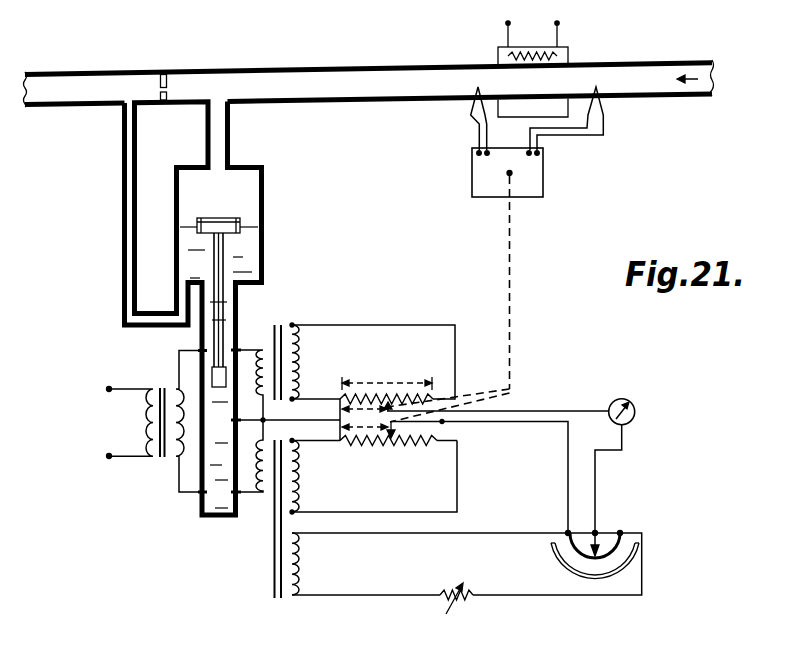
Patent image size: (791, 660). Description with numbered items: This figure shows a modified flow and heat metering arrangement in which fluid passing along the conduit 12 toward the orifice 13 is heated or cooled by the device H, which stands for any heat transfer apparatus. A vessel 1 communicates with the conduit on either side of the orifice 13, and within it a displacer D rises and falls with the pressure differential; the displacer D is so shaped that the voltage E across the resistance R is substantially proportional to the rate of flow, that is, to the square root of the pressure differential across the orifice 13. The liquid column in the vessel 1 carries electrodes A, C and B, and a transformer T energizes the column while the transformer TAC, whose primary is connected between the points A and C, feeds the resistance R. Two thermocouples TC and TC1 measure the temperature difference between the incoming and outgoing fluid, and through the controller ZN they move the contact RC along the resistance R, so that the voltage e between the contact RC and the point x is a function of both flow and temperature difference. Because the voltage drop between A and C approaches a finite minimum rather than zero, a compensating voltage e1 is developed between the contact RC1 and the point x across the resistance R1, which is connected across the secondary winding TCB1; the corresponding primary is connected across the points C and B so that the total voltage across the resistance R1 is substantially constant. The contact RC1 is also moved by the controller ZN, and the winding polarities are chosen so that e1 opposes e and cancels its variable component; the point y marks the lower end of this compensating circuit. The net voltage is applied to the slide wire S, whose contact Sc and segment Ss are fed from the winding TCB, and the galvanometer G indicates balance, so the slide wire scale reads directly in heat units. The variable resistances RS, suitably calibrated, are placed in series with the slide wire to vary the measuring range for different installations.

The conduit pipe 12 is at (334, 71).
The orifice 13 is at (167, 85).
The liquid vessel 1 is at (240, 300).
The displacer D is at (235, 247).
The point A is at (239, 349).
The point B is at (241, 493).
The point C is at (240, 419).
The transformer T is at (156, 422).
The transformer TAC is at (346, 447).
The secondary winding TCB1 is at (300, 500).
The transformer coil TCB is at (300, 573).
The heat transfer device H is at (562, 52).
The thermocouple TC is at (454, 121).
The thermocouple TC1 is at (595, 121).
The controller ZN is at (533, 164).
The contact RC is at (383, 393).
The contact RC1 is at (398, 441).
The resistance R is at (432, 395).
The resistance R1 is at (431, 442).
The voltage across resistance R E is at (387, 383).
The voltage e is at (364, 409).
The voltage e1 is at (365, 427).
The point x is at (340, 399).
The terminal point y is at (340, 441).
The galvanometer G is at (635, 412).
The switch sector S is at (630, 546).
The slide wire contact Sc is at (602, 537).
The switch segment Ss is at (607, 570).
The variable resistances RS is at (462, 612).